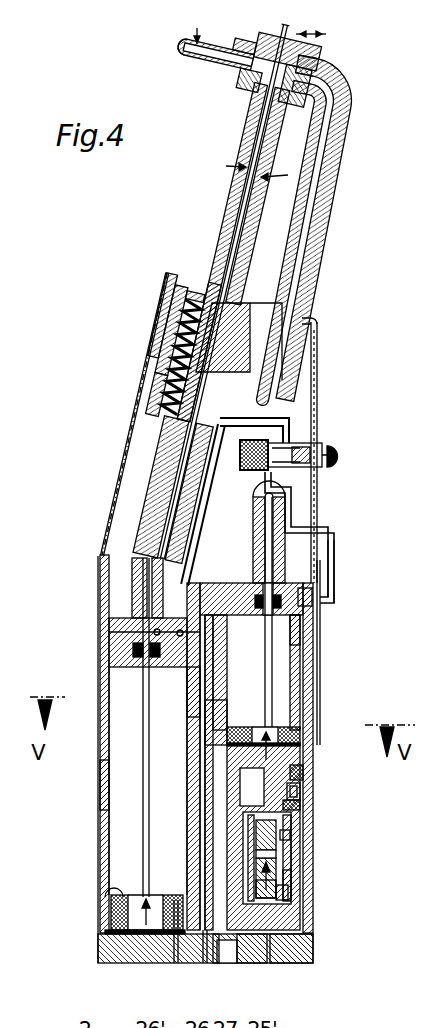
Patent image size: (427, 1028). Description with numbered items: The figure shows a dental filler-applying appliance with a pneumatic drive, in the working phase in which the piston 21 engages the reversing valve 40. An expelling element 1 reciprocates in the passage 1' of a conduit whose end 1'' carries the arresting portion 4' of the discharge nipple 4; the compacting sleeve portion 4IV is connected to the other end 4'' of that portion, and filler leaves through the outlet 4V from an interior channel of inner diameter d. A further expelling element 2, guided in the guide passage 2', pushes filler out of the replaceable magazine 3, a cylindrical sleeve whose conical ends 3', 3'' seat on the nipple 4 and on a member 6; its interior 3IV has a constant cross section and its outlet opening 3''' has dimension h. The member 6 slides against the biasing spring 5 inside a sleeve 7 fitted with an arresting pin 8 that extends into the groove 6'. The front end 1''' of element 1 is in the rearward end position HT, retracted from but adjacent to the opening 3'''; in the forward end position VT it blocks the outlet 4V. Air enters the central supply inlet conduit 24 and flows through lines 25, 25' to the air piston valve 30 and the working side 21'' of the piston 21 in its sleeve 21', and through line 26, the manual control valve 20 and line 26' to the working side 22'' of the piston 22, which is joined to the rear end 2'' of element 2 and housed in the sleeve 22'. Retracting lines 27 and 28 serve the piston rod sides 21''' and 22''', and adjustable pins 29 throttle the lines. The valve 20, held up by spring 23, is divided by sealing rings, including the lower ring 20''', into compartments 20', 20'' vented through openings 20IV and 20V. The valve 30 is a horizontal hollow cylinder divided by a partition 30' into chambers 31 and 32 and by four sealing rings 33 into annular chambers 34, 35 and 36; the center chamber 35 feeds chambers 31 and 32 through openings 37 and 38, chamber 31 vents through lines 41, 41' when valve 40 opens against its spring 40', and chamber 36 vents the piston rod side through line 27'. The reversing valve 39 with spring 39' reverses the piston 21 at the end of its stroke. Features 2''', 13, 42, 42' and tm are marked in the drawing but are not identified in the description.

The expelling element 1 is at (313, 228).
The guide passage 1' is at (306, 244).
The end of tubular member 1'' is at (346, 68).
The front end of expelling element 1''' is at (346, 40).
The further expelling element 2 is at (126, 759).
The guide passage 2' is at (125, 413).
The rear end of expelling element 2'' is at (134, 741).
The housing block 2''' is at (200, 341).
The replaceable magazine 3 is at (233, 255).
The magazine end portion 3' is at (223, 292).
The magazine end portion 3'' is at (234, 94).
The magazine outlet opening 3''' is at (272, 39).
The magazine interior 3IV is at (243, 218).
The discharge nipple 4 is at (310, 51).
The arresting portion 4' is at (297, 106).
The end of arresting portion 4'' is at (224, 70).
The compacting sleeve portion 4IV is at (212, 45).
The nipple outlet 4V is at (182, 50).
The biasing spring 5 is at (160, 403).
The member 6 is at (166, 328).
The groove 6' is at (164, 297).
The sleeve 7 is at (168, 373).
The arresting pin 8 is at (177, 320).
The valve element 13 is at (345, 848).
The manual control valve 20 is at (318, 484).
The upper annular compartment 20' is at (347, 438).
The lower annular compartment 20'' is at (269, 408).
The lower sealing ring 20''' is at (347, 450).
The vent opening 20IV is at (308, 442).
The vent opening 20V is at (333, 532).
The double-acting piston 21 is at (298, 734).
The sleeve 21' is at (355, 652).
The working side of piston 21'' is at (280, 605).
The piston rod side 21''' is at (188, 727).
The double-acting piston 22 is at (112, 912).
The sleeve 22' is at (79, 785).
The working side of piston 22'' is at (180, 967).
The piston rod side 22''' is at (87, 883).
The biasing spring 23 is at (253, 440).
The central air supply inlet conduit 24 is at (222, 950).
The supply line 25 is at (302, 969).
The supply line 25' is at (179, 772).
The supply line 26 is at (252, 772).
The supply line 26' is at (175, 692).
The retracting line 27 is at (245, 756).
The vent line 27' is at (341, 911).
The retracting line 28 is at (197, 513).
The adjustable pins 29 is at (236, 580).
The air piston valve 30 is at (265, 975).
The partition 30' is at (240, 967).
The upper chamber 31 is at (285, 847).
The lower chamber 32 is at (288, 883).
The sealing rings 33 is at (250, 829).
The annular chamber 34 is at (262, 812).
The center annular chamber 35 is at (255, 849).
The annular chamber 36 is at (203, 963).
The opening 37 is at (300, 861).
The opening 38 is at (298, 887).
The reversing valve 39 is at (287, 640).
The spring 39' is at (351, 596).
The reversing valve 40 is at (333, 793).
The spring 40' is at (349, 802).
The vent line 41 is at (323, 816).
The vent line 41' is at (341, 771).
The right wall 42 is at (351, 758).
The conduit 42' is at (367, 571).
The inner diameter d is at (190, 26).
The outlet opening dimension h is at (249, 166).
The thickness tm is at (311, 22).
The forward end position VT is at (123, 684).
The rearward end position HT is at (107, 934).